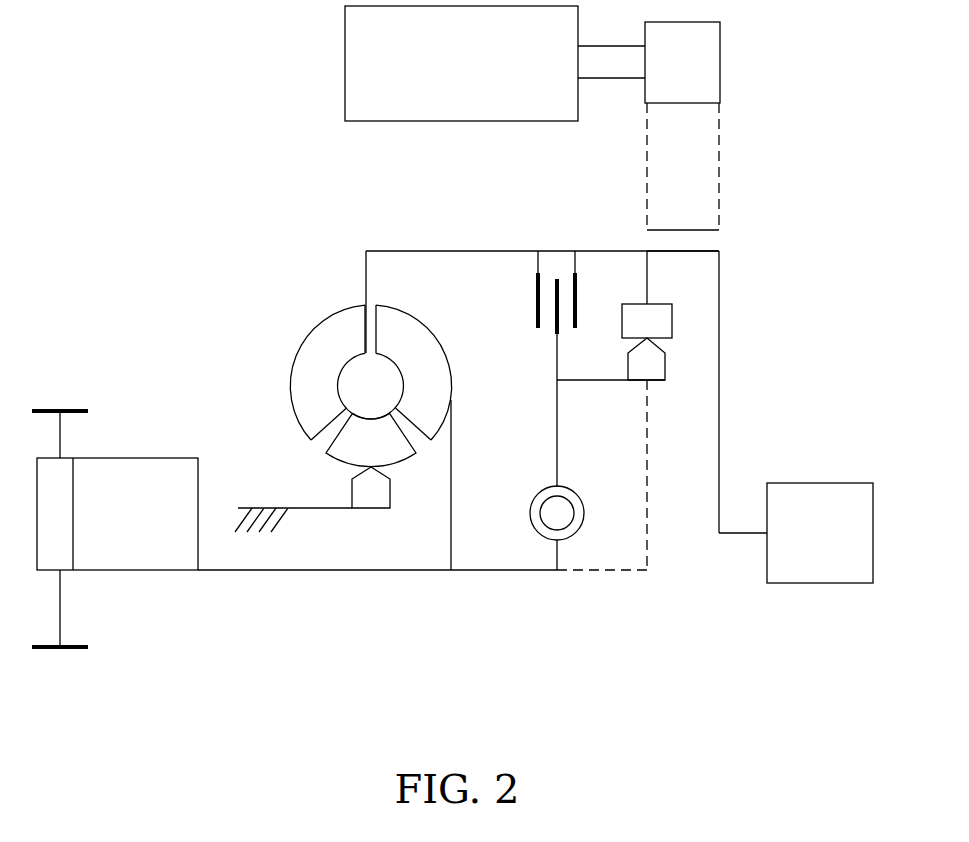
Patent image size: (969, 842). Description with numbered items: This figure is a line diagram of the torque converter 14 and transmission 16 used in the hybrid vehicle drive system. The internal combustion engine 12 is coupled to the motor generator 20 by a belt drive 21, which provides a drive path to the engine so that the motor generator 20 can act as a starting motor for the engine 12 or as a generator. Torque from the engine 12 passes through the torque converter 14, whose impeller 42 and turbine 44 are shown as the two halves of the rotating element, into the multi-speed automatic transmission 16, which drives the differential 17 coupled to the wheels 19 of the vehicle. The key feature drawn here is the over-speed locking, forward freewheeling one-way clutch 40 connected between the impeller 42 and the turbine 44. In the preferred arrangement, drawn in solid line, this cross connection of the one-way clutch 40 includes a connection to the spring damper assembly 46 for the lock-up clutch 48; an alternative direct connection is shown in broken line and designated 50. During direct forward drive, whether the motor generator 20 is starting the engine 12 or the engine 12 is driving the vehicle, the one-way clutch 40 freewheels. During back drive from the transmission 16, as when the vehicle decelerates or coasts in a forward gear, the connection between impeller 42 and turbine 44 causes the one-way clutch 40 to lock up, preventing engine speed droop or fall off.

The internal combustion engine 12 is at (801, 543).
The torque converter 14 is at (342, 407).
The multi-speed automatic transmission 16 is at (409, 624).
The differential 17 is at (42, 522).
The wheels 19 is at (75, 411).
The motor generator 20 is at (479, 100).
The belt drive 21 is at (713, 168).
The one-way clutch 40 is at (670, 321).
The impeller 42 is at (315, 337).
The turbine 44 is at (408, 328).
The spring damper assembly 46 is at (574, 490).
The lock-up clutch 48 is at (536, 287).
The alternative direct connection 50 is at (720, 433).